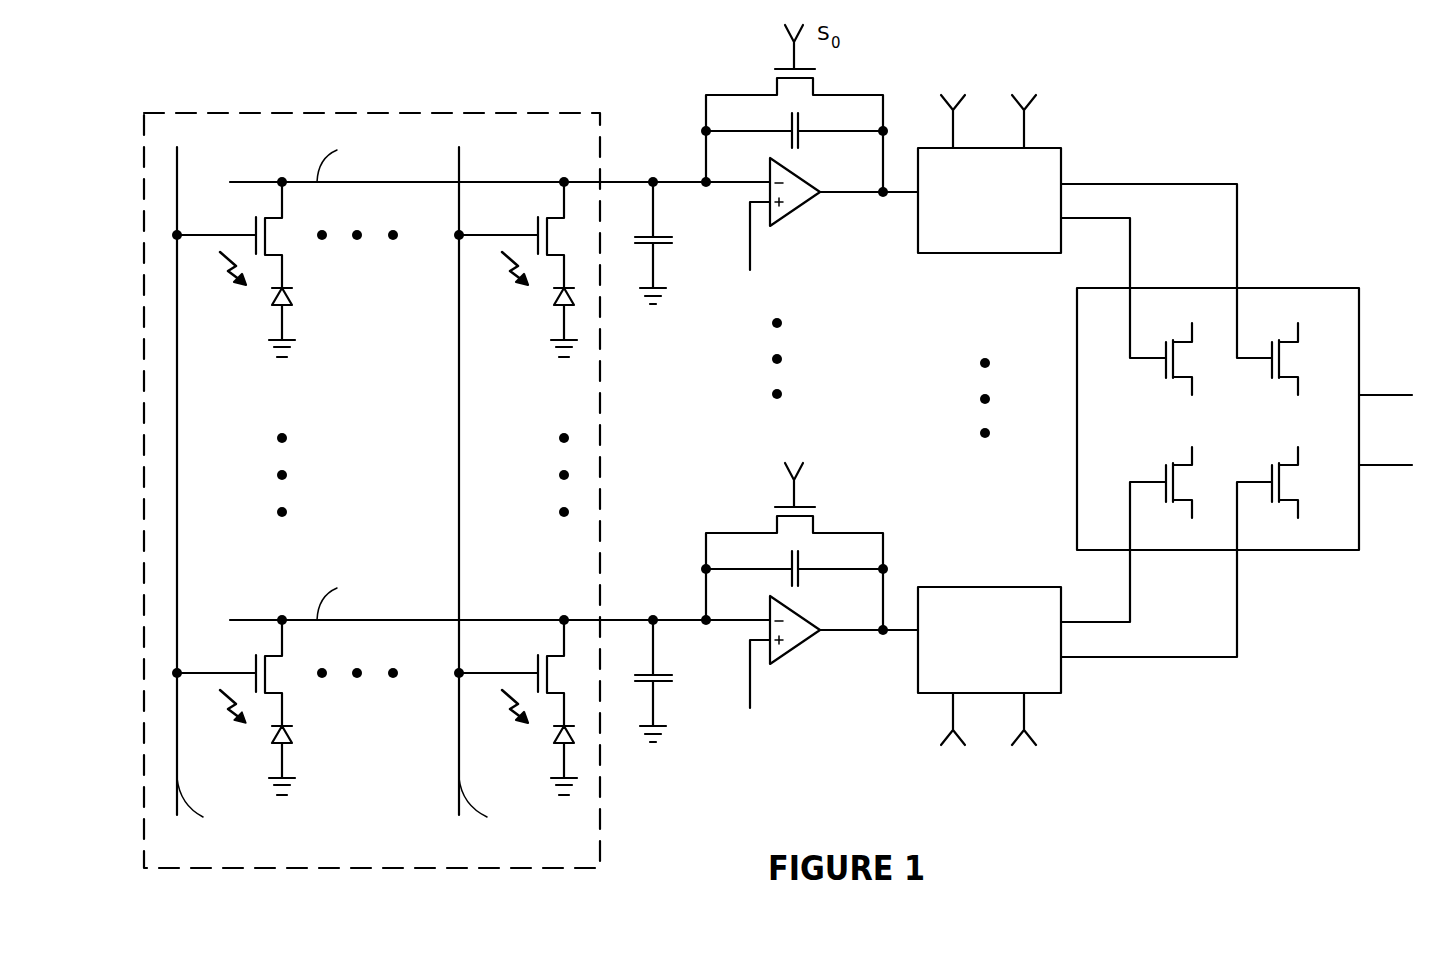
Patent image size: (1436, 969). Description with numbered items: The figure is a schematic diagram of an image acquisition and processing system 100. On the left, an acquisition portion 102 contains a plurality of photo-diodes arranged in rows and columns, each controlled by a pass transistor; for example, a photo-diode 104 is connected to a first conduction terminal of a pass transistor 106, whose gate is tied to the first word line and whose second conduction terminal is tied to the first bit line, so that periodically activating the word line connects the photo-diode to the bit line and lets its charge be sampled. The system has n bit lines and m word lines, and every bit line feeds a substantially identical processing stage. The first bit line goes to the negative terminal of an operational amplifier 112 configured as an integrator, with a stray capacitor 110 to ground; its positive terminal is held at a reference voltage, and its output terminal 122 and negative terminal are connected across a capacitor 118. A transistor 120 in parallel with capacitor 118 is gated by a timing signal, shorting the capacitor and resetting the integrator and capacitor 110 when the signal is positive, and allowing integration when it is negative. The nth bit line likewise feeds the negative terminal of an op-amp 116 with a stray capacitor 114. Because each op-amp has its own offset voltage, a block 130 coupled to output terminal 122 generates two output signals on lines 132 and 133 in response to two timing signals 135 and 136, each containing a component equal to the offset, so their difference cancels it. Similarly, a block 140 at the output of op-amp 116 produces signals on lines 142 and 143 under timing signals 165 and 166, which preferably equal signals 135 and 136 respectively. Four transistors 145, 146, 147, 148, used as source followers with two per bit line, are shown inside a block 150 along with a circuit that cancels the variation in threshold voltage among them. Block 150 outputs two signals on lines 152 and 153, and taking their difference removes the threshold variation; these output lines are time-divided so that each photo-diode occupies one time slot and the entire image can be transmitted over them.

The image acquisition and processing system 100 is at (1272, 763).
The acquisition portion 102 is at (457, 490).
The photo-diode 104 is at (288, 733).
The pass transistor 106 is at (283, 637).
The capacitor 110 is at (662, 685).
The operational amplifier 112 is at (787, 660).
The stray capacitor 114 is at (663, 233).
The operational amplifier 116 is at (790, 215).
The capacitor 118 is at (798, 578).
The transistor 120 is at (773, 525).
The output terminal 122 is at (882, 635).
The block 130 is at (1007, 587).
The output line 132 is at (1182, 657).
The output line 133 is at (1130, 585).
The timing signal 135 is at (953, 707).
The timing signal 136 is at (1024, 707).
The block 140 is at (1007, 255).
The output line 142 is at (1130, 255).
The output line 143 is at (1237, 220).
The transistor 145 is at (1298, 455).
The transistor 146 is at (1190, 458).
The transistor 147 is at (1193, 382).
The transistor 148 is at (1298, 387).
The block 150 is at (1290, 550).
The output line 152 is at (1377, 465).
The output line 153 is at (1377, 392).
The timing signal 165 is at (950, 132).
The timing signal 166 is at (1024, 132).